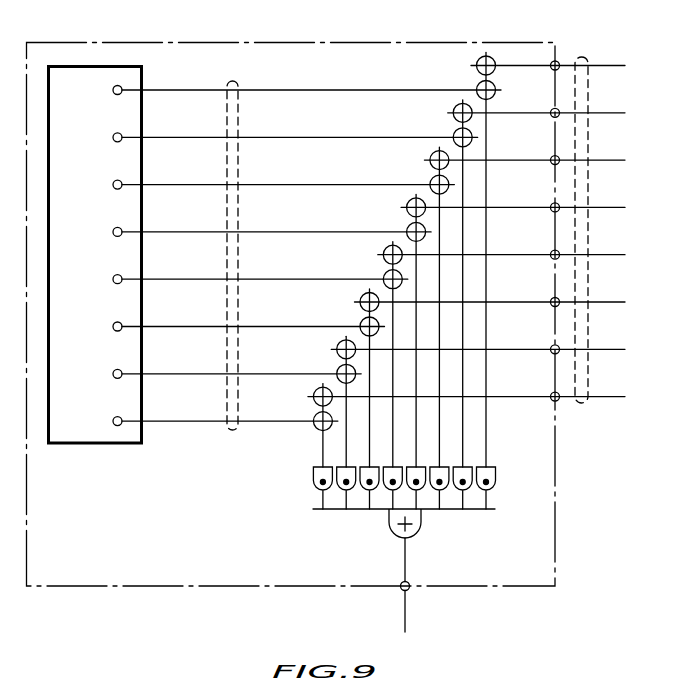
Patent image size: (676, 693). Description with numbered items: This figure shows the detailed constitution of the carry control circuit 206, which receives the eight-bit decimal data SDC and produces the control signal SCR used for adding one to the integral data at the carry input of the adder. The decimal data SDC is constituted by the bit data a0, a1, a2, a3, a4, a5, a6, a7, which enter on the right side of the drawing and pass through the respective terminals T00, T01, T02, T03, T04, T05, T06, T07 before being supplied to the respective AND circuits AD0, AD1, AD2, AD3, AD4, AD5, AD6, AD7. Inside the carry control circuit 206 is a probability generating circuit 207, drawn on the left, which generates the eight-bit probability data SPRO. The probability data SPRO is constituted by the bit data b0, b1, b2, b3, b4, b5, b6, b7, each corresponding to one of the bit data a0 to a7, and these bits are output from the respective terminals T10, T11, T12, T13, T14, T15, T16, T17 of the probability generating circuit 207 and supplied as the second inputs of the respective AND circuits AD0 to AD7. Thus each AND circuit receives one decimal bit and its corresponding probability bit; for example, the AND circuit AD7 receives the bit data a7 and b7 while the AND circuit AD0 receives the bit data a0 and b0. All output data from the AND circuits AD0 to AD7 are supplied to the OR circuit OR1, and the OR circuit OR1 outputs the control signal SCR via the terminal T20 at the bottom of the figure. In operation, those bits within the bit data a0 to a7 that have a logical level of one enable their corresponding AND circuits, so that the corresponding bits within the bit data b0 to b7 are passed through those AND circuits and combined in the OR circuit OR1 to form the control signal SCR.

The carry control circuit 206 is at (207, 42).
The probability generating circuit 207 is at (86, 447).
The terminal T17 is at (122, 87).
The terminal T16 is at (122, 134).
The terminal T15 is at (122, 182).
The terminal T14 is at (122, 229).
The terminal T13 is at (122, 276).
The terminal T12 is at (122, 324).
The terminal T11 is at (122, 371).
The terminal T10 is at (122, 418).
The terminal T07 is at (551, 70).
The terminal T06 is at (551, 117).
The terminal T05 is at (551, 164).
The terminal T04 is at (551, 211).
The terminal T03 is at (551, 259).
The terminal T02 is at (551, 306).
The terminal T01 is at (551, 353).
The terminal T00 is at (551, 401).
The terminal T20 is at (408, 582).
The bit data b7 is at (207, 92).
The bit data b6 is at (207, 139).
The bit data b5 is at (207, 187).
The bit data b4 is at (207, 234).
The bit data b3 is at (207, 281).
The bit data b2 is at (207, 328).
The bit data b1 is at (207, 376).
The bit data b0 is at (200, 423).
The bit data a7 is at (607, 64).
The bit data a6 is at (607, 111).
The bit data a5 is at (607, 158).
The bit data a4 is at (607, 205).
The bit data a3 is at (607, 253).
The bit data a2 is at (607, 300).
The bit data a1 is at (607, 347).
The bit data a0 is at (607, 395).
The AND circuit AD0 is at (313, 488).
The AND circuit AD1 is at (340, 488).
The AND circuit AD2 is at (363, 488).
The AND circuit AD3 is at (387, 488).
The AND circuit AD4 is at (422, 488).
The AND circuit AD5 is at (447, 489).
The AND circuit AD6 is at (470, 489).
The AND circuit AD7 is at (494, 489).
The OR circuit OR1 is at (396, 535).
The probability data SPRO is at (231, 434).
The decimal data SDC is at (582, 405).
The control signal SCR is at (407, 611).